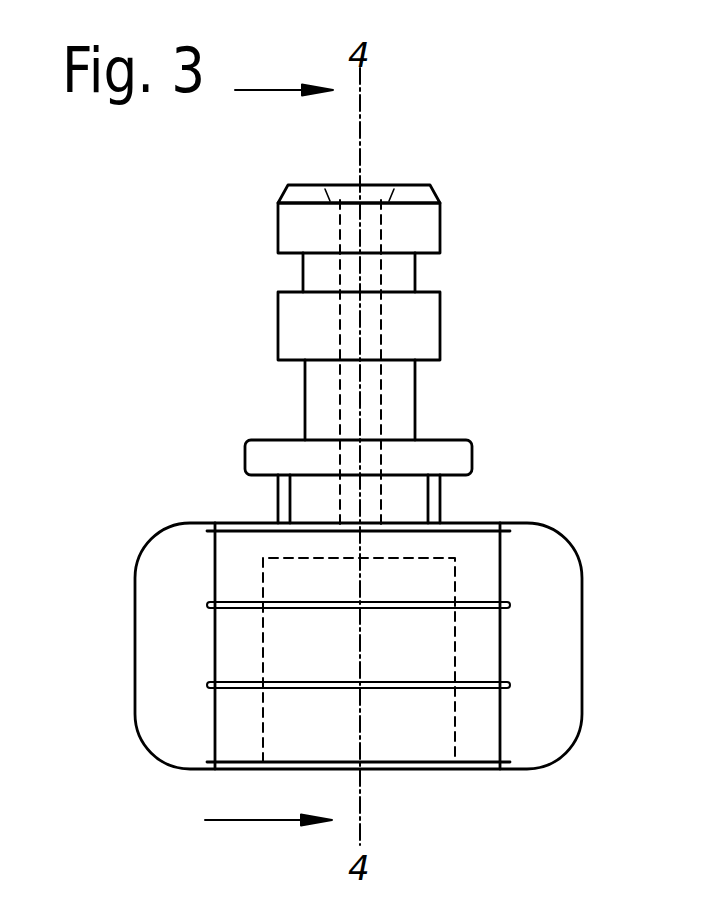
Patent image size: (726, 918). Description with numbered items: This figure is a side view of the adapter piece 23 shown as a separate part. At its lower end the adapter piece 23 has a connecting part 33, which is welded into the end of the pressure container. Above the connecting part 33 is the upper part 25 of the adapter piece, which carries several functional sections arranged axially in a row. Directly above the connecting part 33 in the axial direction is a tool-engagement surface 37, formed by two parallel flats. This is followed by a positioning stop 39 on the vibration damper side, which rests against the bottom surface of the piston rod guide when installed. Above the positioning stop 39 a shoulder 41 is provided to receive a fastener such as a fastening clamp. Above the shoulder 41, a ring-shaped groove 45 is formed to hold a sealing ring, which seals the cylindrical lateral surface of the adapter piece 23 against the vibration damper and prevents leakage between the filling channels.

The adapter piece 23 is at (212, 203).
The upper part 25 is at (258, 183).
The connecting part 33 is at (479, 633).
The tool-engagement surface 37 is at (467, 496).
The positioning stop 39 is at (440, 457).
The shoulder 41 is at (433, 393).
The ring-shaped groove 45 is at (432, 273).